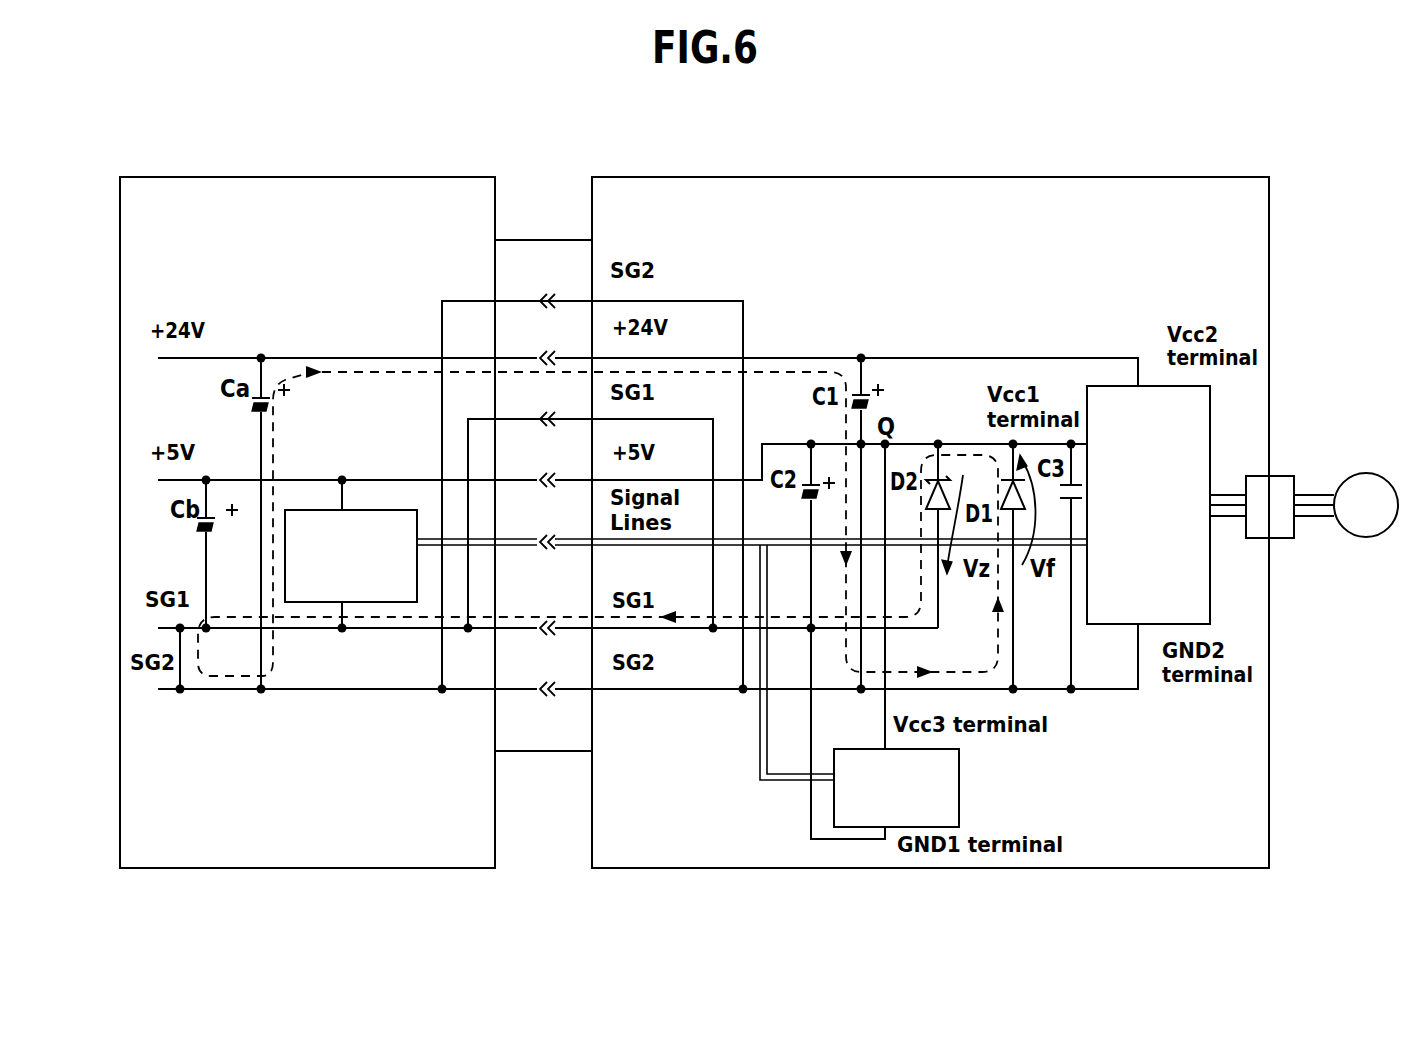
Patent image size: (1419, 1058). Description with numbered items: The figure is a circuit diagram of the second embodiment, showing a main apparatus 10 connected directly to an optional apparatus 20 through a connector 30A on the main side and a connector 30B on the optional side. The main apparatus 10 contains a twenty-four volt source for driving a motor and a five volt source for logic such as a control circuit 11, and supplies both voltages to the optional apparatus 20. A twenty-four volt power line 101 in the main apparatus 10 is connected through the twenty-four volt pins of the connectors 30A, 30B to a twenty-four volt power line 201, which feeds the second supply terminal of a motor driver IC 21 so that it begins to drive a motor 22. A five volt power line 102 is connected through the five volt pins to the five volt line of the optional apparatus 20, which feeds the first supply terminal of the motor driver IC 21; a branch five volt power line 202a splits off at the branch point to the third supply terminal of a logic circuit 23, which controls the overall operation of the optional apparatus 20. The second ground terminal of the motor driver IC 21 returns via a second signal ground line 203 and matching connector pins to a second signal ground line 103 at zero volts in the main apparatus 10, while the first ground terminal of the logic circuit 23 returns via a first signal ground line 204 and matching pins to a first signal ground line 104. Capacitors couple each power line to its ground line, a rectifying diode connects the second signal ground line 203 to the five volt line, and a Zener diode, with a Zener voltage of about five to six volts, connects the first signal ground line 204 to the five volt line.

The main apparatus 10 is at (307, 507).
The optional apparatus 20 is at (930, 507).
The control circuit 11 is at (351, 554).
The motor driver IC 21 is at (1148, 505).
The motor 22 is at (1305, 476).
The logic circuit 23 is at (896, 788).
The connector 30A is at (513, 751).
The connector 30B is at (573, 751).
The +24 V power line 101 is at (378, 356).
The +5 V power line 102 is at (378, 478).
The SG2 line 103 is at (308, 692).
The SG1 line 104 is at (378, 632).
The +24 V power line 201 is at (928, 356).
The +5 V power line 202a is at (885, 724).
The SG2 line 203 is at (683, 692).
The SG1 line 204 is at (678, 632).